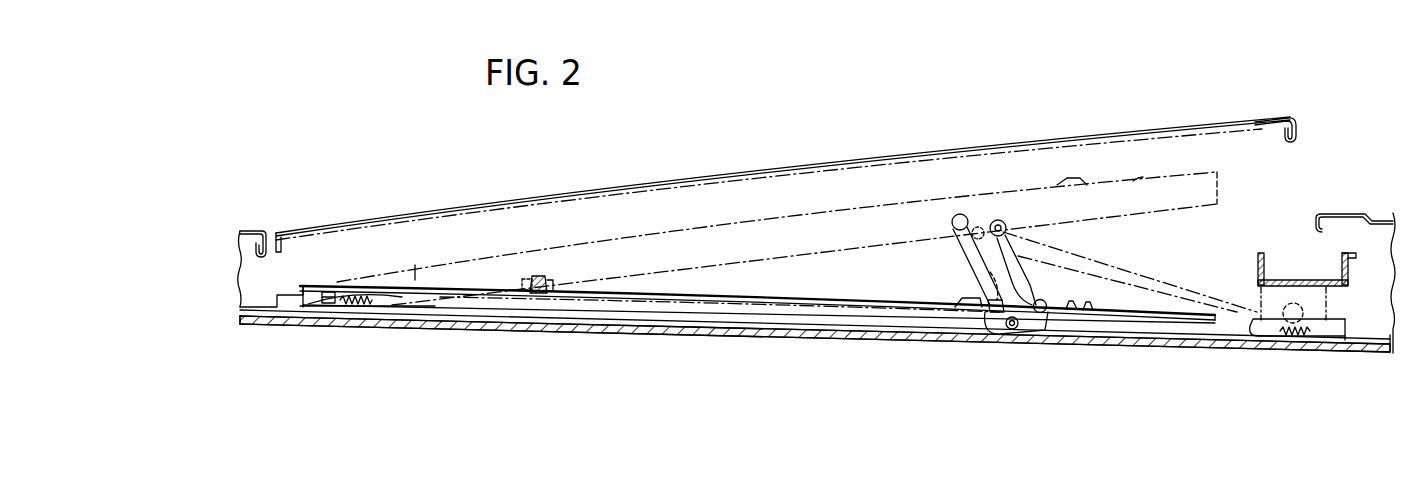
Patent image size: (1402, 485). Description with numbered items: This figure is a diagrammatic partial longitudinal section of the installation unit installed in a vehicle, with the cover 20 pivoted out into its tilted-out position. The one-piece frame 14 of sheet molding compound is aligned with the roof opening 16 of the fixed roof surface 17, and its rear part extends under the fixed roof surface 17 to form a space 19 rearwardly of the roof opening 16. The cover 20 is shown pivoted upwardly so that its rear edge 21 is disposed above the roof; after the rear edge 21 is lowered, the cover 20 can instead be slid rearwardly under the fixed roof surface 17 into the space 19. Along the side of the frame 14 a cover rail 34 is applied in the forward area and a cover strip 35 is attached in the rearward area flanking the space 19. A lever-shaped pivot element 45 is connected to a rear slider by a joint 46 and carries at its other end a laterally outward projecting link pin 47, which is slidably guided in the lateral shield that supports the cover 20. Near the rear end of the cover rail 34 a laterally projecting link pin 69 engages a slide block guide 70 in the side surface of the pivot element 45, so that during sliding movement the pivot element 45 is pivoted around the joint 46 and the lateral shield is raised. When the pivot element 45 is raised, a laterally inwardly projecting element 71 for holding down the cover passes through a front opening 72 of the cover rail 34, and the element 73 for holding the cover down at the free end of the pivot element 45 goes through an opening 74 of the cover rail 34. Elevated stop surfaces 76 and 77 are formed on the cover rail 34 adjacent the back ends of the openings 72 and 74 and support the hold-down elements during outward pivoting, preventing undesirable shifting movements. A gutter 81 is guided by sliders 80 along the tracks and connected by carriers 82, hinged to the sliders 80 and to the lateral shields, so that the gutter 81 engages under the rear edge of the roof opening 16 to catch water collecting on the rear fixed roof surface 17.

The frame 14 is at (613, 326).
The roof opening 16 is at (1310, 168).
The fixed roof surface 17 is at (262, 228).
The space 19 is at (1375, 284).
The cover 20 is at (792, 174).
The rear edge 21 is at (1288, 116).
The cover rail 34 is at (710, 306).
The cover strip 35 is at (1341, 340).
The pivot element 45 is at (1025, 236).
The joint 46 is at (1012, 330).
The link pin 47 is at (999, 222).
The link pin 69 is at (1041, 313).
The slide block guide 70 is at (977, 272).
The element for holding down the cover 71 is at (532, 275).
The front opening 72 is at (535, 296).
The element for holding the cover down 73 is at (958, 212).
The opening 74 is at (980, 308).
The stop surface 76 is at (553, 283).
The stop surface 77 is at (992, 313).
The slider 80 is at (1262, 332).
The gutter 81 is at (1290, 254).
The carrier 82 is at (1113, 267).